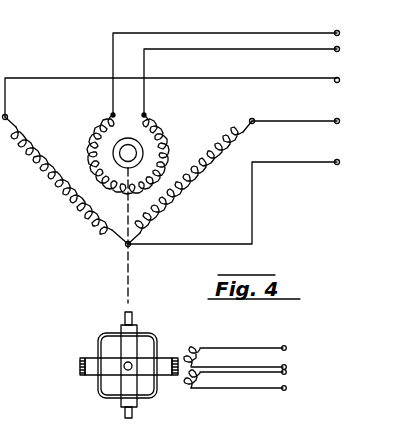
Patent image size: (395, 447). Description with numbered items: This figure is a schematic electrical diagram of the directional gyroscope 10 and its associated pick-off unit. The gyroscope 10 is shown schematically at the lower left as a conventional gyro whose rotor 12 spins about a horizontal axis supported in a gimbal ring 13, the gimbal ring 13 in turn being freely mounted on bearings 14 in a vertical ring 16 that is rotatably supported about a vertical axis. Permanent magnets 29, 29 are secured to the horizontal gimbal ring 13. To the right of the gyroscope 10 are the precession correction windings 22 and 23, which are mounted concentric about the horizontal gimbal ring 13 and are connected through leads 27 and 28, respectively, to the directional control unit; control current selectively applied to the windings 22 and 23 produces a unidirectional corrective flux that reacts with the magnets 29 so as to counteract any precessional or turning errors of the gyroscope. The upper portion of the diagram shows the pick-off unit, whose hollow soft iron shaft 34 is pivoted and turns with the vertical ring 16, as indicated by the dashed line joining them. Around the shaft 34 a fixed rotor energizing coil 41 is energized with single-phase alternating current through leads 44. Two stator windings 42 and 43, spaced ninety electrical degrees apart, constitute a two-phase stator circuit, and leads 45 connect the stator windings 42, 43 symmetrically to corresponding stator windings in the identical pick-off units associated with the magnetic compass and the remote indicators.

The directional gyroscope 10 is at (84, 346).
The rotor 12 is at (141, 396).
The gimbal ring 13 is at (92, 378).
The bearings 14 is at (128, 370).
The vertical ring 16 is at (137, 330).
The precession correction winding 22 is at (201, 350).
The precession correction winding 23 is at (193, 390).
The lead 27 is at (286, 348).
The lead 28 is at (286, 372).
The permanent magnets 29 is at (79, 367).
The hollow soft iron shaft 34 is at (137, 131).
The rotor energizing coil 41 is at (168, 151).
The stator winding 42 is at (82, 206).
The stator winding 43 is at (180, 197).
The leads 44 is at (346, 23).
The leads 45 is at (346, 68).